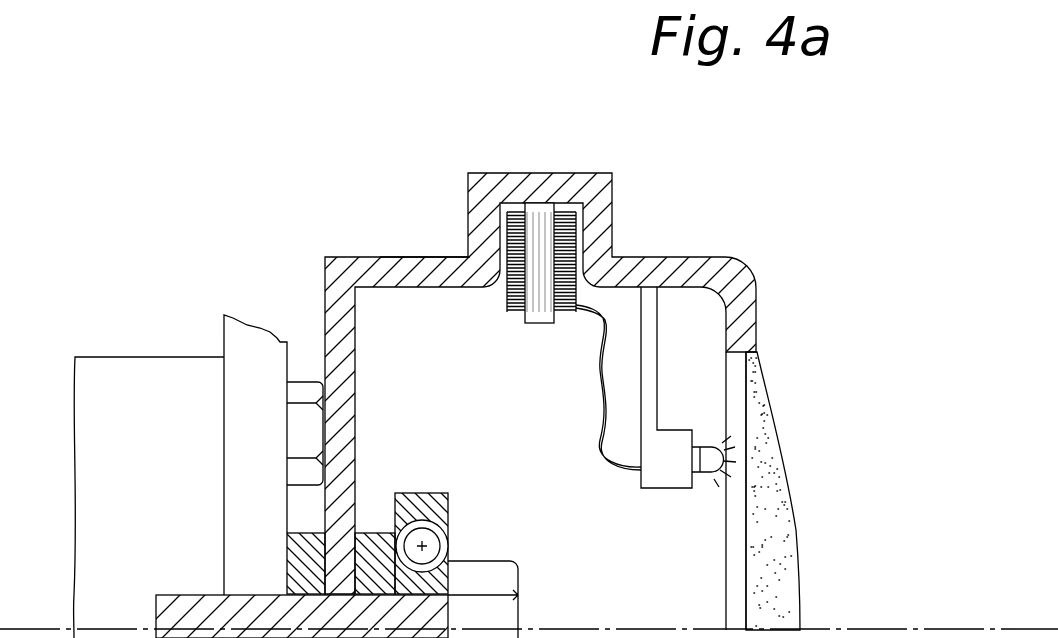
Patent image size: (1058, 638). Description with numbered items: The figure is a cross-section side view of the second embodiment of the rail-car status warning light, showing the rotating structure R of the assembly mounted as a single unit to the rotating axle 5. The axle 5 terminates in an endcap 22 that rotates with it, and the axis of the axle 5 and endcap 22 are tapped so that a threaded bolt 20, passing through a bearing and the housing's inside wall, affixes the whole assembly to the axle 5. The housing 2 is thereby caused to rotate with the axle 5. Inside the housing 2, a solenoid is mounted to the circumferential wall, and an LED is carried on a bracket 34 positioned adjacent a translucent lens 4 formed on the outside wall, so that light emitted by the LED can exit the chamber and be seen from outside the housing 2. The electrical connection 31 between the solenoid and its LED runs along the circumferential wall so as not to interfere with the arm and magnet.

The housing 2 is at (737, 273).
The rotating structure R is at (400, 257).
The bracket 34 is at (641, 385).
The electrical connection 31 is at (603, 438).
The translucent lens 4 is at (790, 490).
The axle 5 is at (104, 357).
The endcap 22 is at (247, 338).
The threaded bolt 20 is at (519, 590).